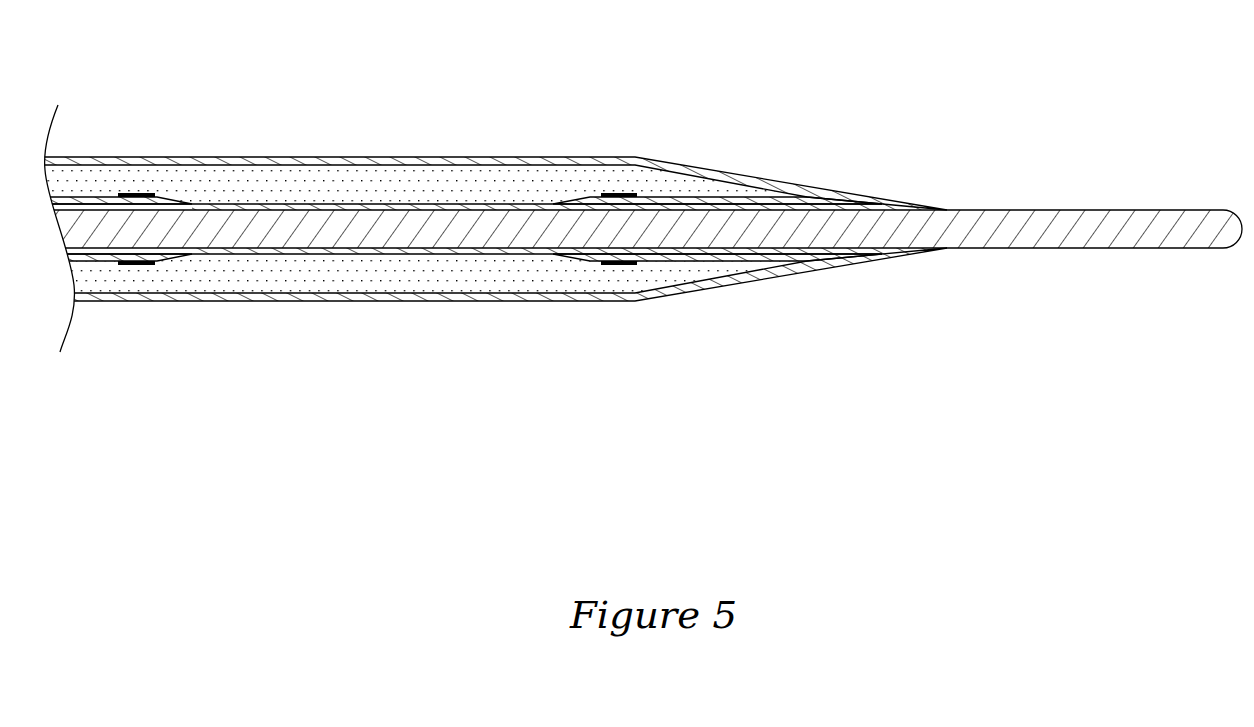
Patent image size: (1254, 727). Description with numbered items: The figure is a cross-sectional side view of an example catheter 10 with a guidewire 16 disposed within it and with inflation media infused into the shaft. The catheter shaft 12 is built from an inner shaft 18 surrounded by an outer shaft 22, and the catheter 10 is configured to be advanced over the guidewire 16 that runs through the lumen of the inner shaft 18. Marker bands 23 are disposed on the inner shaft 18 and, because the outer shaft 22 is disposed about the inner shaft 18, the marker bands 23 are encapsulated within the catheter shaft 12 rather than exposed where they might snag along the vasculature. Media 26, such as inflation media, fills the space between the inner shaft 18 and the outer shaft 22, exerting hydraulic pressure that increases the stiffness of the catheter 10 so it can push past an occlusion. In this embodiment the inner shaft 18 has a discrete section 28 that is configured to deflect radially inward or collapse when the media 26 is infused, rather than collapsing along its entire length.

The catheter 10 is at (518, 78).
The catheter shaft 12 is at (149, 143).
The outer shaft 22 is at (293, 158).
The inflation media 26 is at (603, 182).
The discrete section 28 is at (438, 208).
The inner shaft 18 is at (723, 197).
The guidewire 16 is at (1072, 222).
The marker bands 23 is at (137, 265).